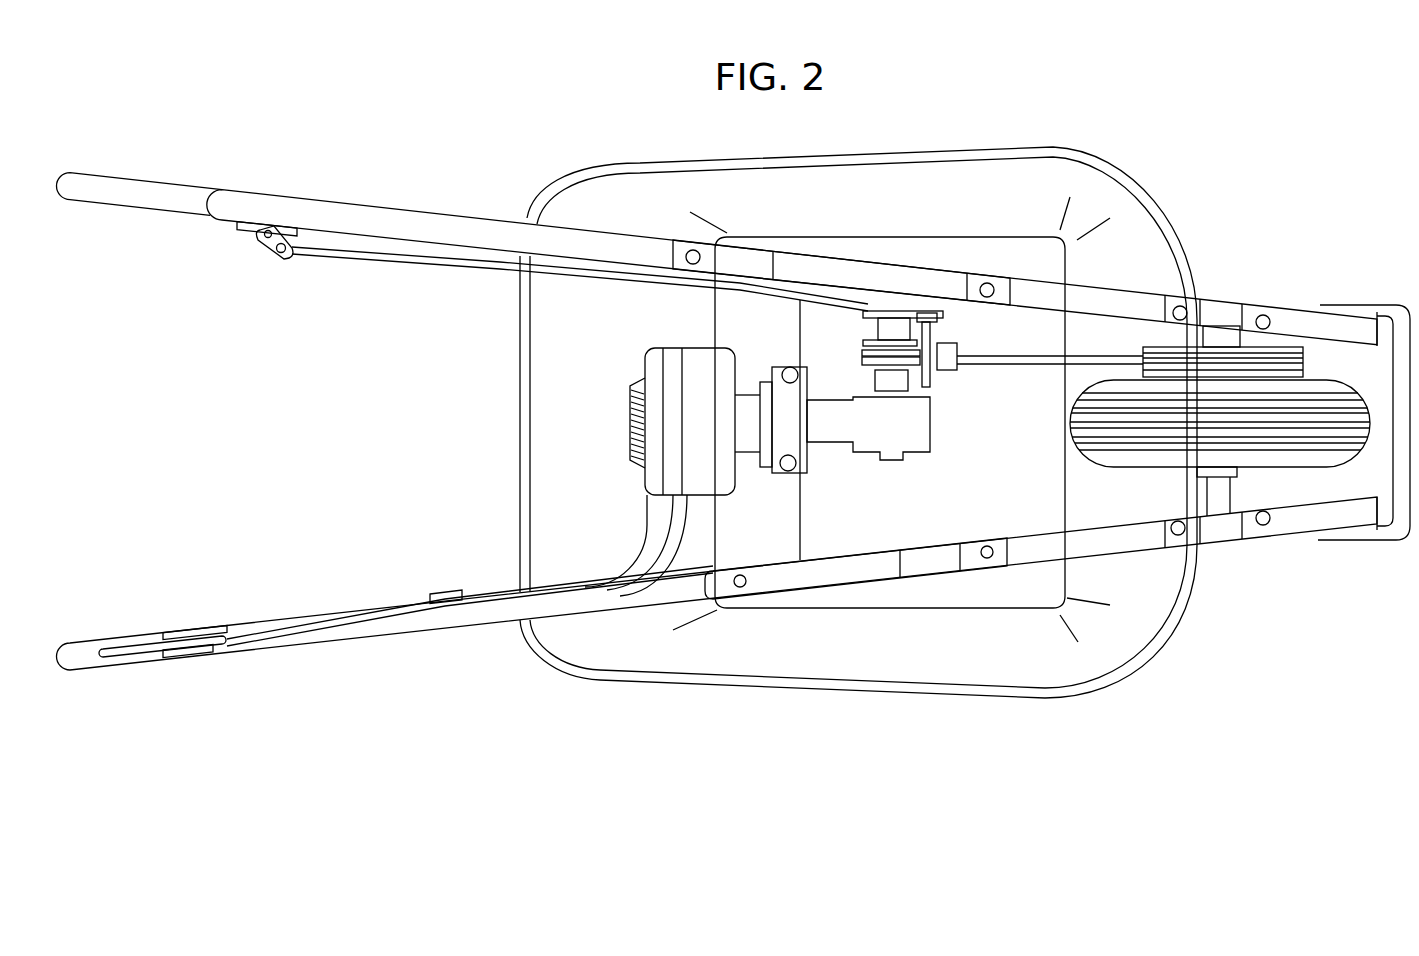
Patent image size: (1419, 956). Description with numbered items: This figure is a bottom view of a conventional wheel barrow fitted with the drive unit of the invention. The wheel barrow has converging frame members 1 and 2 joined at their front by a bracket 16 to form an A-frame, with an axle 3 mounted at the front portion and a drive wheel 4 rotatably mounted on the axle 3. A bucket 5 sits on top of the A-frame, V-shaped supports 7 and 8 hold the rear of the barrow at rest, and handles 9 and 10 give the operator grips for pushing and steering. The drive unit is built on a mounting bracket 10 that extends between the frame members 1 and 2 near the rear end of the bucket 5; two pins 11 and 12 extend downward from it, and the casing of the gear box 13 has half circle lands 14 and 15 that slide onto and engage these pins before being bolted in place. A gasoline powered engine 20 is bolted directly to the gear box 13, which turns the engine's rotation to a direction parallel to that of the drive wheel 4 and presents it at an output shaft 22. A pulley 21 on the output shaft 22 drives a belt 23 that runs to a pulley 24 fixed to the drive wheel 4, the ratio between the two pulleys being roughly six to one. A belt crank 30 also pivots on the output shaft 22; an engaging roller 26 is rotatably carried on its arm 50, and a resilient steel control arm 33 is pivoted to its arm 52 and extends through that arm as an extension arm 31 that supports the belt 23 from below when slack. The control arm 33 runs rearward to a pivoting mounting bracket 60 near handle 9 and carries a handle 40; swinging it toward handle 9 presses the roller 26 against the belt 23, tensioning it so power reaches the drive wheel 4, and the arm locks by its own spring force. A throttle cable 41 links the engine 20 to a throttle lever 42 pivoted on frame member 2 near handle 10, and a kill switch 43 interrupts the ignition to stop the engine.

The frame member 1 is at (487, 223).
The frame member 2 is at (498, 598).
The axle 3 is at (1220, 503).
The drive wheel 4 is at (1343, 455).
The bucket 5 is at (692, 167).
The V-shaped support 7 is at (752, 263).
The V-shaped support 8 is at (807, 577).
The handle 9 is at (155, 188).
The mounting bracket 10 is at (785, 532).
The pin 11 is at (783, 477).
The pin 12 is at (790, 367).
The gear box 13 is at (830, 420).
The half circle land 14 is at (797, 467).
The half circle land 15 is at (795, 375).
The bracket 16 is at (1377, 317).
The gasoline powered engine 20 is at (700, 360).
The pulley 21 is at (864, 312).
The output shaft 22 is at (903, 310).
The belt 23 is at (1033, 370).
The pulley 24 is at (1281, 348).
The engaging roller 26 is at (943, 375).
The belt crank 30 is at (892, 303).
The extension arm 31 is at (935, 373).
The control arm 33 is at (417, 262).
The handle 40 is at (277, 258).
The throttle cable 41 is at (313, 628).
The throttle lever 42 is at (145, 647).
The kill switch 43 is at (423, 600).
The arm 50 is at (943, 330).
The arm 52 is at (920, 303).
The pivoting mounting bracket 60 is at (280, 227).